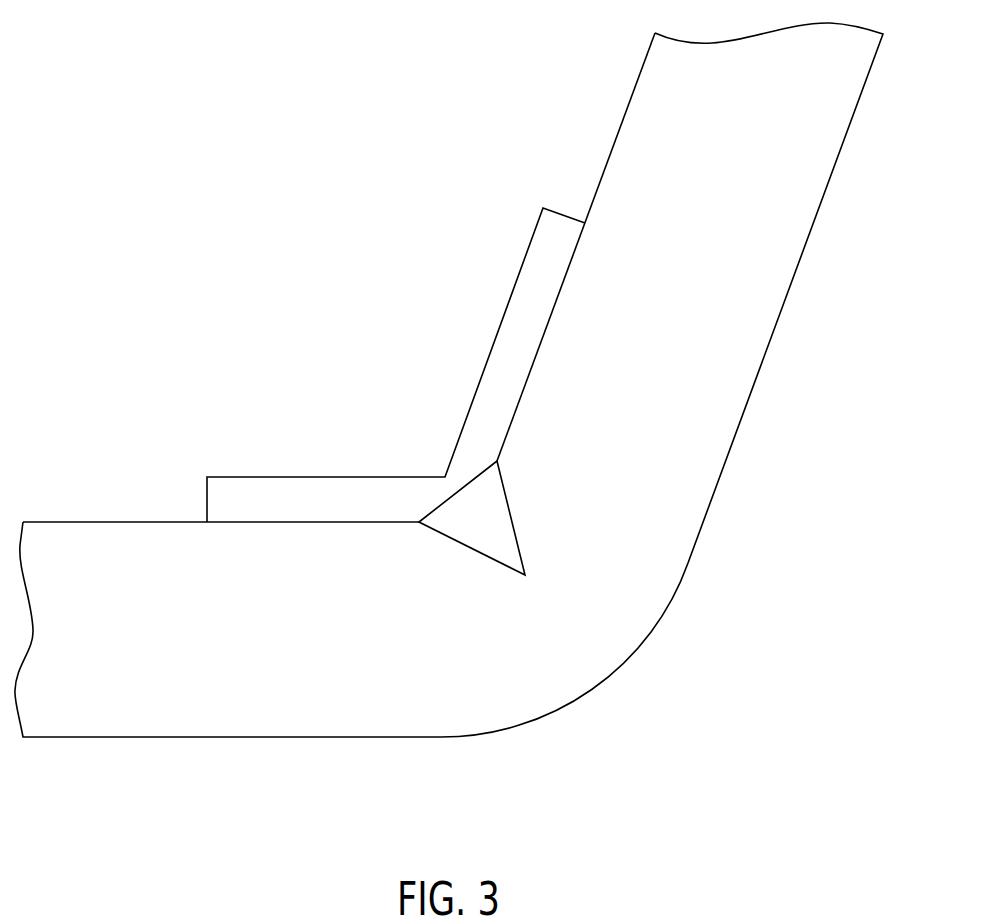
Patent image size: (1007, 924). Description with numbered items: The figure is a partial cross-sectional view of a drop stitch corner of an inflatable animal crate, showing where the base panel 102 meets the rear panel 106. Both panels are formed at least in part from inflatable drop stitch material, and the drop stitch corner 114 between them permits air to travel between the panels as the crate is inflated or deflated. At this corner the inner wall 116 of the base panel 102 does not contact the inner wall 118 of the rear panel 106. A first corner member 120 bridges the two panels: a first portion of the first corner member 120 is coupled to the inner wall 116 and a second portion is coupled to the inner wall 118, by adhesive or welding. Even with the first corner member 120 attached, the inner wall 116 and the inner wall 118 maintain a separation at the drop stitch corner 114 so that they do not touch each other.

The base panel 102 is at (213, 722).
The rear panel 106 is at (740, 360).
The drop stitch corner 114 is at (677, 652).
The inner wall of the base panel 116 is at (181, 522).
The inner wall of the rear panel 118 is at (618, 127).
The first corner member 120 is at (512, 355).